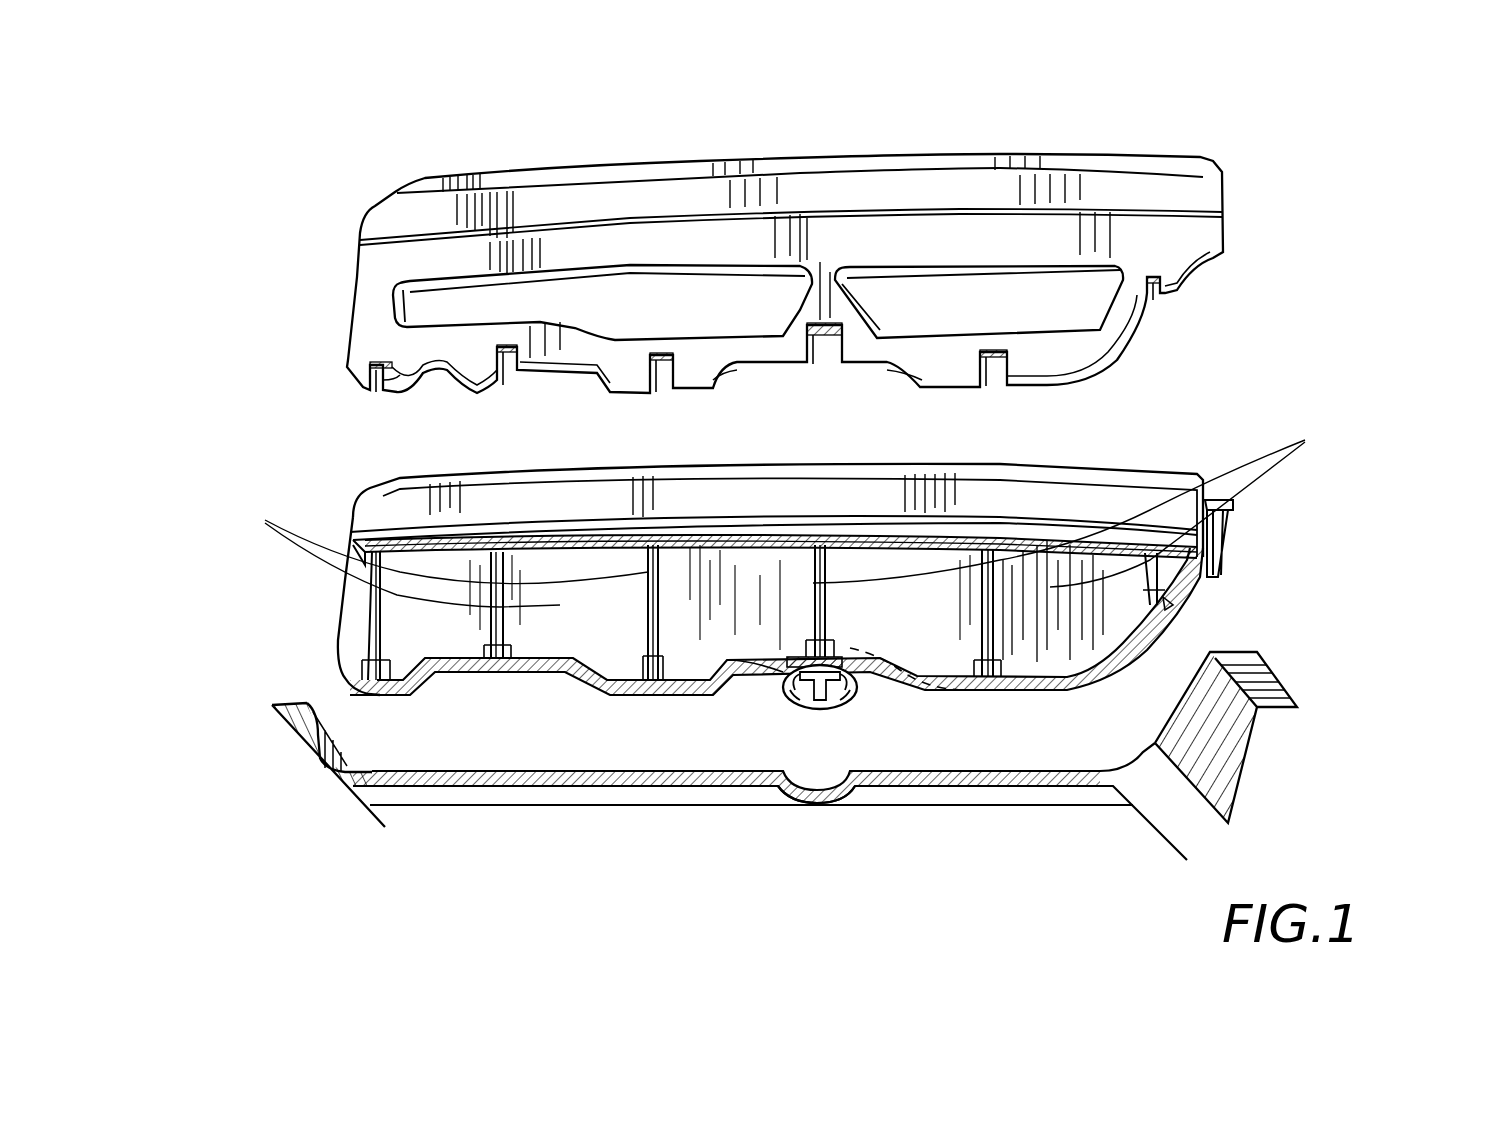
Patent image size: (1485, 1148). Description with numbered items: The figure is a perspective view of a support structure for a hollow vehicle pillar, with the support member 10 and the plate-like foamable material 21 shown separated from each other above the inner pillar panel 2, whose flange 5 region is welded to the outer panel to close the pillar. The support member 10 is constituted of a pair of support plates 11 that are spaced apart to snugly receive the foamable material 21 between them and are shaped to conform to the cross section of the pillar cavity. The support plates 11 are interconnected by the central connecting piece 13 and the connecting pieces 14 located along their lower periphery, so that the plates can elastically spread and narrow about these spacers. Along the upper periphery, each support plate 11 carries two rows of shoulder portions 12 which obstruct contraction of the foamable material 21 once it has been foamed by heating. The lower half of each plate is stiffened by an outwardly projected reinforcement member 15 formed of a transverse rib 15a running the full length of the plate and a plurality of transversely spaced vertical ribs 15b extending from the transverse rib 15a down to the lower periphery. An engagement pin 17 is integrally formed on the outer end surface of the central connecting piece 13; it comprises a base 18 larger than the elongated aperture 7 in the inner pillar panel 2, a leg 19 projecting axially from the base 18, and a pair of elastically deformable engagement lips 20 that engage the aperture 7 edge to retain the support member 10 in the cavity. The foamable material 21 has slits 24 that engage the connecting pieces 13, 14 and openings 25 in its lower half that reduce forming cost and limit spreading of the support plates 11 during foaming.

The inner pillar panel 2 is at (1050, 770).
The flange 5 is at (300, 700).
The aperture 7 is at (820, 795).
The support member 10 is at (1111, 460).
The support plates 11 is at (1200, 590).
The shoulder portions 12 is at (1222, 528).
The central connecting piece 13 is at (917, 704).
The connecting pieces 14 is at (375, 688).
The reinforcement member 15 is at (1363, 385).
The transverse rib 15a is at (1100, 527).
The vertical ribs 15b is at (262, 518).
The engagement pin 17 is at (764, 691).
The base 18 is at (800, 657).
The leg 19 is at (826, 690).
The engagement lips 20 is at (795, 690).
The foamable material 21 is at (970, 150).
The slits 24 is at (378, 393).
The openings 25 is at (603, 280).